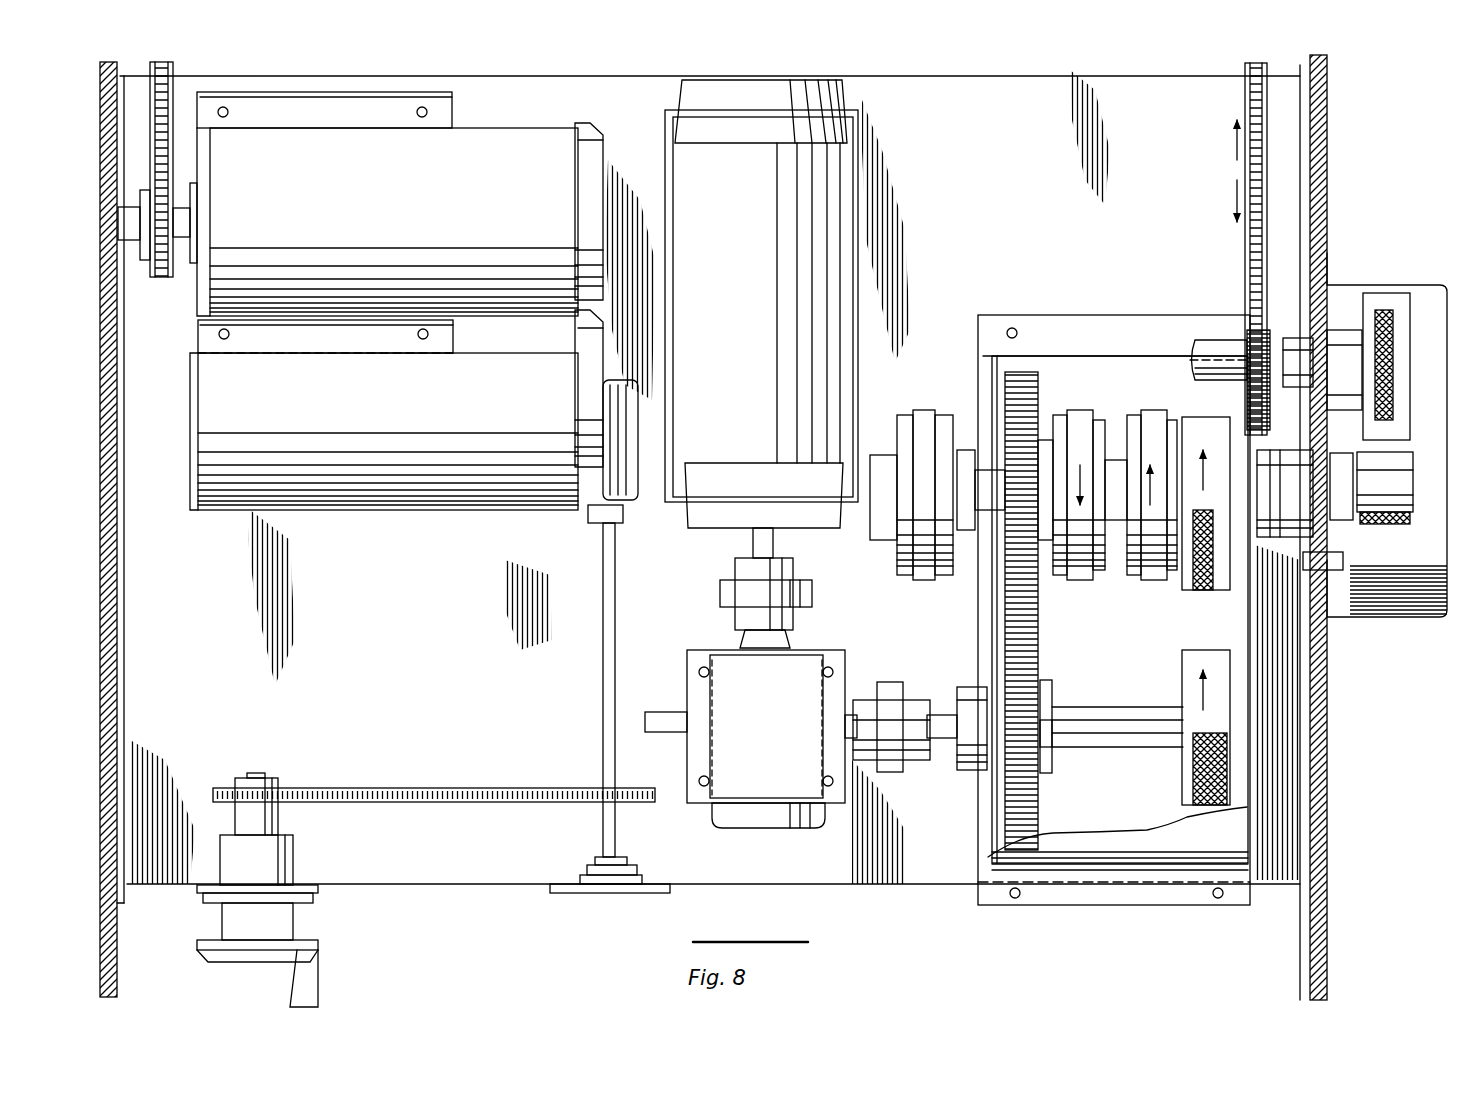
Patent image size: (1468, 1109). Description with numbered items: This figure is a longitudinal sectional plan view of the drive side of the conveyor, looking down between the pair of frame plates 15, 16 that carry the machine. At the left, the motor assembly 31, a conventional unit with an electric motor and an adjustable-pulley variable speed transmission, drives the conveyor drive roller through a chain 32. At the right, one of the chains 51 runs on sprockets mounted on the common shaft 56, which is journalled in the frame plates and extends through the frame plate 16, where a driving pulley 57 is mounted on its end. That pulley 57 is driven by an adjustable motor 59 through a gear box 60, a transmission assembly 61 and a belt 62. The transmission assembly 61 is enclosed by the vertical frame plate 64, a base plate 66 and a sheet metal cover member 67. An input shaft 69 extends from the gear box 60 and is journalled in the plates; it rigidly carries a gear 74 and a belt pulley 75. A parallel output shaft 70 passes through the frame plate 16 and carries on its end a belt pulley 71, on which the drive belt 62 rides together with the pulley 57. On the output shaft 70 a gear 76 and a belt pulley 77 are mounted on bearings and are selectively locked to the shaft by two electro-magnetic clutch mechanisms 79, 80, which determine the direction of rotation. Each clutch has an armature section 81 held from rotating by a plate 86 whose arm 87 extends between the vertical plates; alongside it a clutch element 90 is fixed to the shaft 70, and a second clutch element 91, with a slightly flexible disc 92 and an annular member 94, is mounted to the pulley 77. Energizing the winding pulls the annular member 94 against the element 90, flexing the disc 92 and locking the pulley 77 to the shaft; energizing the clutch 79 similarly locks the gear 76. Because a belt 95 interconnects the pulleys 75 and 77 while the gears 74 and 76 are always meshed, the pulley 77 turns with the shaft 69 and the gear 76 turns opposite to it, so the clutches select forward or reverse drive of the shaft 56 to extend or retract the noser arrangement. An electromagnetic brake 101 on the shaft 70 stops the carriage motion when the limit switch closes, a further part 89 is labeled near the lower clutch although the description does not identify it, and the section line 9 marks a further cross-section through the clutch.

The section line 9 is at (968, 270).
The frame plate 15 is at (102, 930).
The frame plate 16 is at (1330, 950).
The motor assembly 31 is at (356, 515).
The chain 32 is at (152, 145).
The chain 51 is at (1265, 232).
The shaft 56 is at (1228, 343).
The driving pulley 57 is at (1353, 297).
The adjustable motor 59 is at (828, 238).
The gear box 60 is at (760, 787).
The transmission assembly 61 is at (972, 780).
The belt 62 is at (1392, 308).
The vertical frame plate 64 is at (960, 873).
The base plate 66 is at (980, 332).
The sheet metal cover member 67 is at (980, 317).
The input shaft 69 is at (942, 730).
The output shaft 70 is at (957, 477).
The belt pulley 71 is at (1413, 523).
The gear 74 is at (1028, 810).
The belt pulley 75 is at (1213, 705).
The gear 76 is at (1022, 546).
The belt pulley 77 is at (1228, 543).
The electro-magnetic clutch mechanism 79 is at (1078, 402).
The electro-magnetic clutch mechanism 80 is at (1153, 403).
The armature section 81 is at (1093, 430).
The plate 86 is at (1120, 590).
The arm 87 is at (1110, 545).
The bearing 89 is at (1147, 607).
The clutch element 90 is at (1072, 413).
The second clutch element 91 is at (1058, 413).
The flexible disc 92 is at (1057, 577).
The annular member 94 is at (997, 625).
The belt 95 is at (1260, 753).
The electromagnetic brake 101 is at (880, 537).